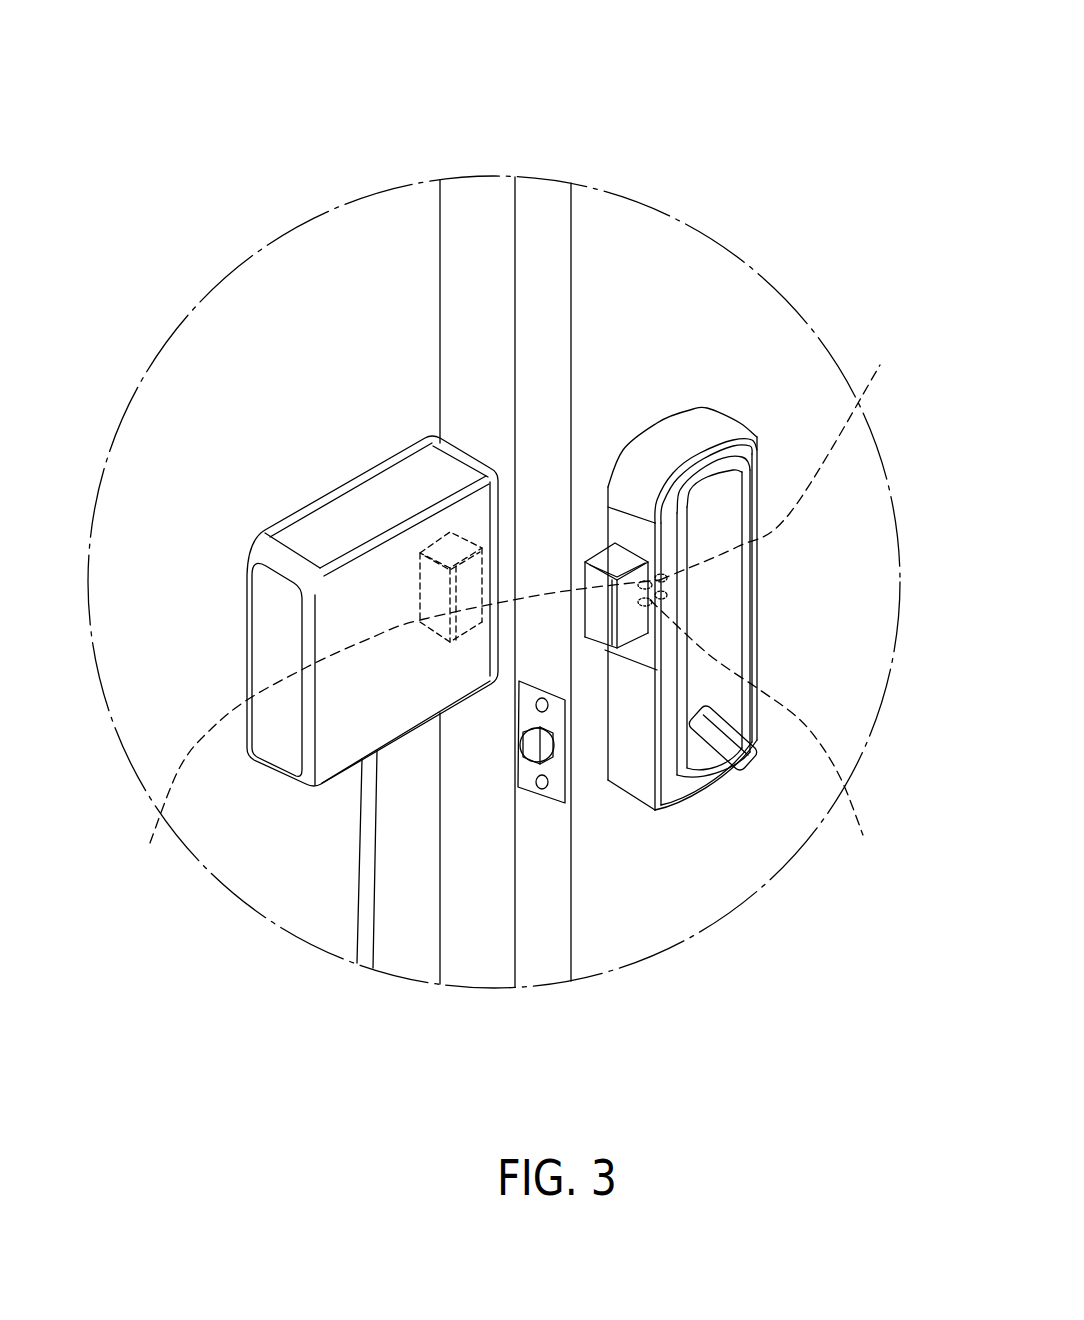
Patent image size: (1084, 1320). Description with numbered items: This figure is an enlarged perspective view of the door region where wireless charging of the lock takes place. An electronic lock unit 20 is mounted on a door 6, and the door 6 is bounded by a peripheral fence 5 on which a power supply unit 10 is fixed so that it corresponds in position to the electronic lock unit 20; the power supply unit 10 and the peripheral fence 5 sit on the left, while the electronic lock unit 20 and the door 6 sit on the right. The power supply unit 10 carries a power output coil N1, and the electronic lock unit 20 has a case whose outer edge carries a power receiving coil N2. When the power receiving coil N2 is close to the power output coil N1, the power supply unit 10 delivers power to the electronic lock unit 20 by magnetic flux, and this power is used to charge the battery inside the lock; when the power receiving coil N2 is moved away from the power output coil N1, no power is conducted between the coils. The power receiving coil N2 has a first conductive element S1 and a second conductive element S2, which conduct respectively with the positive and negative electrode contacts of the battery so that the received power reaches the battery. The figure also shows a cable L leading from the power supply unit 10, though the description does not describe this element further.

The peripheral fence 5 is at (395, 250).
The door 6 is at (602, 253).
The power supply unit 10 is at (397, 588).
The electronic lock unit 20 is at (722, 538).
The cable L is at (367, 862).
The power output coil N1 is at (391, 737).
The power receiving coil N2 is at (617, 578).
The first conductive element S1 is at (786, 451).
The second conductive element S2 is at (766, 740).